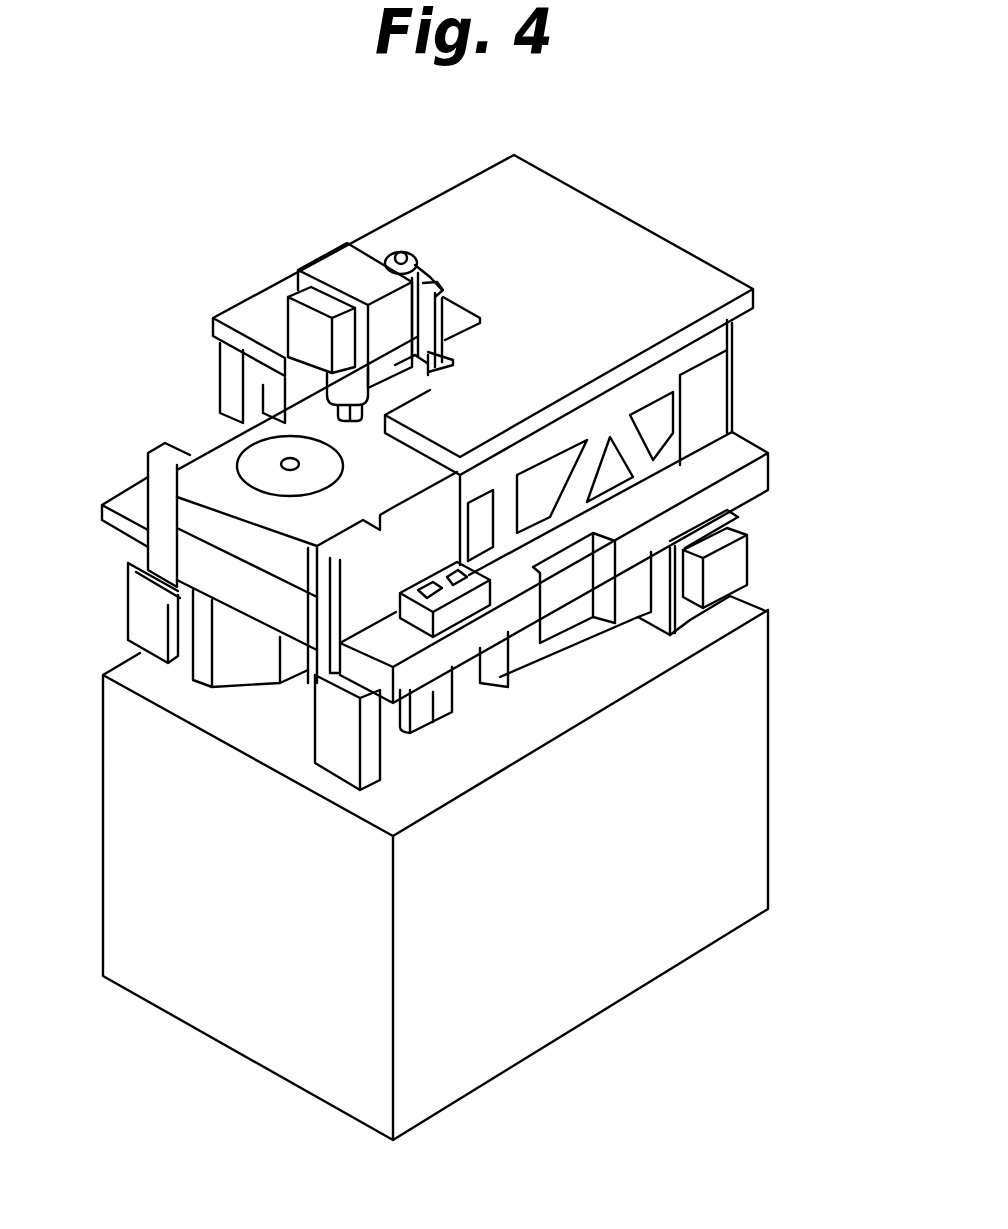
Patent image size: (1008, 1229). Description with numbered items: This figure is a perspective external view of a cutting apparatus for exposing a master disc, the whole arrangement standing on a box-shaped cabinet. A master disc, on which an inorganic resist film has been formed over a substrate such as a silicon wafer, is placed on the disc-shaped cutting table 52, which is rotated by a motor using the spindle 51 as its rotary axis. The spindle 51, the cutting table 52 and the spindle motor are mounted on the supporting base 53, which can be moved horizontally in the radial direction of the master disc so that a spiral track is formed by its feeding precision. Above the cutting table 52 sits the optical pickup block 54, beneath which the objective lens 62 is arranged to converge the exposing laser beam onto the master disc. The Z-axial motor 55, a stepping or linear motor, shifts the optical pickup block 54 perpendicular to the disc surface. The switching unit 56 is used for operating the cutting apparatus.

The spindle 51 is at (258, 462).
The cutting table 52 is at (252, 478).
The supporting base 53 is at (225, 487).
The optical pickup block 54 is at (328, 265).
The Z-axial motor 55 is at (397, 248).
The switching unit 56 is at (461, 609).
The objective lens 62 is at (326, 374).